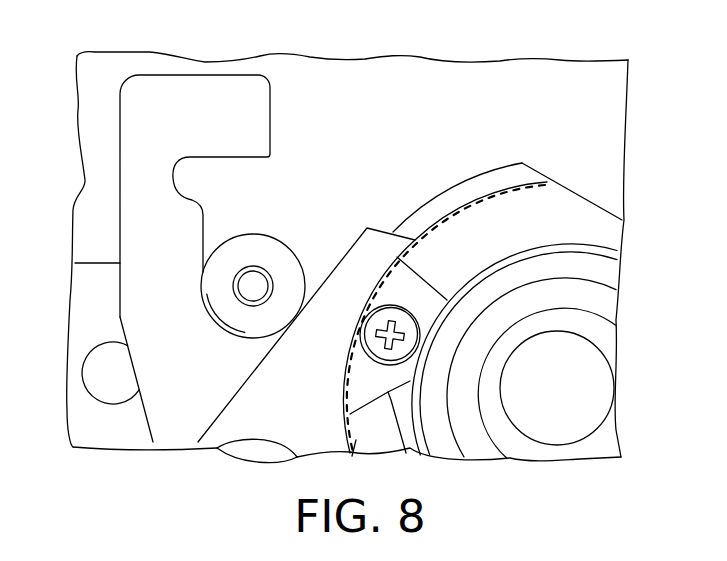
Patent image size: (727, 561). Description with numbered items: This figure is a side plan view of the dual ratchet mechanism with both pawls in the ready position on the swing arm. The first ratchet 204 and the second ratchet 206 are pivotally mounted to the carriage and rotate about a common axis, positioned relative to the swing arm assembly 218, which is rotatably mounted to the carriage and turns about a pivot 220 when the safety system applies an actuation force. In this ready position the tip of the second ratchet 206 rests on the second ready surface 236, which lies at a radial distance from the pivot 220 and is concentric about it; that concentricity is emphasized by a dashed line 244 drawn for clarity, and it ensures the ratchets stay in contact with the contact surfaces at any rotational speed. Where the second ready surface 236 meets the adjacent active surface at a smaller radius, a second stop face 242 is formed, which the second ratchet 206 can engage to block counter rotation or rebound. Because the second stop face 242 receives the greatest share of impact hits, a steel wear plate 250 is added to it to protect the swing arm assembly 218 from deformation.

The first ratchet 204 is at (118, 243).
The second ratchet 206 is at (356, 233).
The swing arm assembly 218 is at (602, 203).
The pivot 220 is at (565, 390).
The second ready surface 236 is at (472, 198).
The second stop face 242 is at (368, 410).
The dashed line 244 is at (518, 183).
The steel wear plate 250 is at (427, 278).